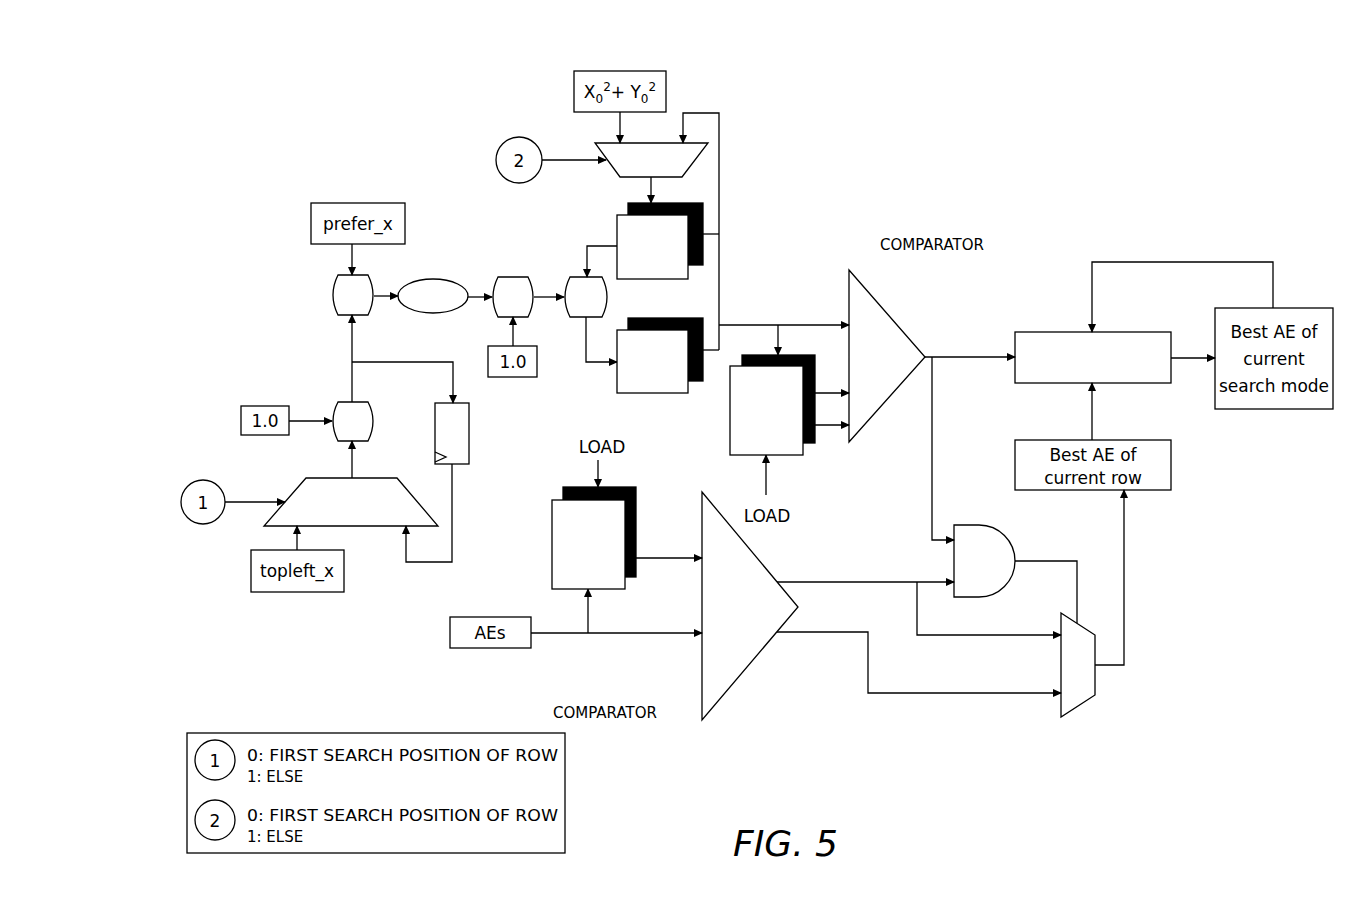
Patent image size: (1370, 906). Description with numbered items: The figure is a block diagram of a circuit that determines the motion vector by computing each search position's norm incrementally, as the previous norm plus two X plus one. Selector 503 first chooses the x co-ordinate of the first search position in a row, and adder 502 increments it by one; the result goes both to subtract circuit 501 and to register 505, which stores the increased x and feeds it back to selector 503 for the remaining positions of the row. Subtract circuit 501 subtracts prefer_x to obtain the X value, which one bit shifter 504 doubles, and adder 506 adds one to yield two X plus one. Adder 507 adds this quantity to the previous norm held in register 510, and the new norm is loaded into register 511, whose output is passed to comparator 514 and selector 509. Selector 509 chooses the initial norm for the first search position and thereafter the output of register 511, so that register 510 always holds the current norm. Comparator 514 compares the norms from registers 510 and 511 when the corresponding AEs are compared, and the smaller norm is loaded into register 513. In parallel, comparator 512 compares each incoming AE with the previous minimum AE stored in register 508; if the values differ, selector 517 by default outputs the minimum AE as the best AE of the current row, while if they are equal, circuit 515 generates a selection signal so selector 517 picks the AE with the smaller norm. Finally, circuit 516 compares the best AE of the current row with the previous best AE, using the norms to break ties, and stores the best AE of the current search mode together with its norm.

The subtract circuit 501 is at (331, 298).
The adder 502 is at (332, 415).
The selector 503 is at (326, 478).
The one bit shifter 504 is at (433, 279).
The register 505 is at (469, 420).
The adder 506 is at (513, 277).
The adder 507 is at (581, 318).
The register 508 is at (552, 575).
The selector 509 is at (610, 170).
The register 510 is at (688, 205).
The register 511 is at (653, 393).
The comparator 512 is at (702, 680).
The register 513 is at (815, 438).
The comparator 514 is at (862, 285).
The selection signal circuit 515 is at (980, 528).
The best AE of current search mode circuit 516 is at (1013, 375).
The selector 517 is at (1097, 680).